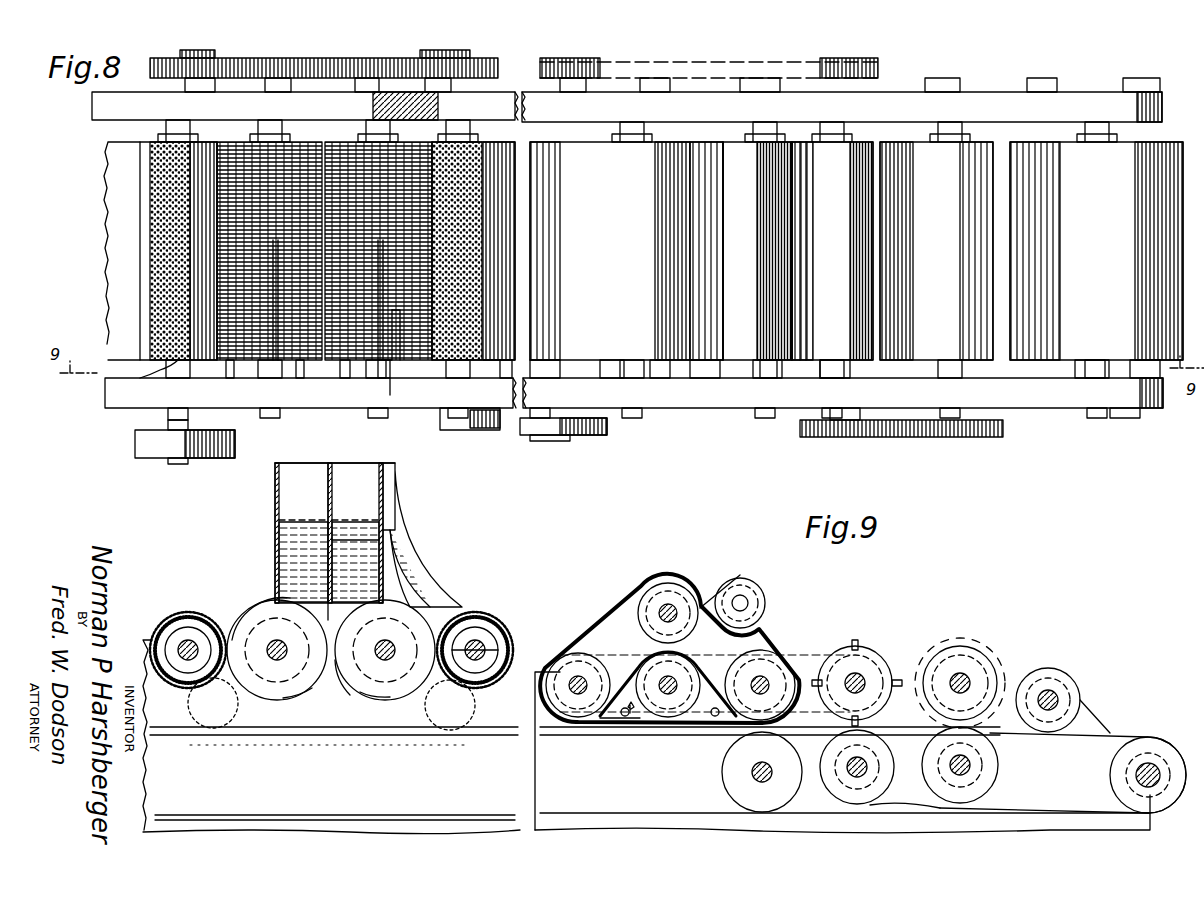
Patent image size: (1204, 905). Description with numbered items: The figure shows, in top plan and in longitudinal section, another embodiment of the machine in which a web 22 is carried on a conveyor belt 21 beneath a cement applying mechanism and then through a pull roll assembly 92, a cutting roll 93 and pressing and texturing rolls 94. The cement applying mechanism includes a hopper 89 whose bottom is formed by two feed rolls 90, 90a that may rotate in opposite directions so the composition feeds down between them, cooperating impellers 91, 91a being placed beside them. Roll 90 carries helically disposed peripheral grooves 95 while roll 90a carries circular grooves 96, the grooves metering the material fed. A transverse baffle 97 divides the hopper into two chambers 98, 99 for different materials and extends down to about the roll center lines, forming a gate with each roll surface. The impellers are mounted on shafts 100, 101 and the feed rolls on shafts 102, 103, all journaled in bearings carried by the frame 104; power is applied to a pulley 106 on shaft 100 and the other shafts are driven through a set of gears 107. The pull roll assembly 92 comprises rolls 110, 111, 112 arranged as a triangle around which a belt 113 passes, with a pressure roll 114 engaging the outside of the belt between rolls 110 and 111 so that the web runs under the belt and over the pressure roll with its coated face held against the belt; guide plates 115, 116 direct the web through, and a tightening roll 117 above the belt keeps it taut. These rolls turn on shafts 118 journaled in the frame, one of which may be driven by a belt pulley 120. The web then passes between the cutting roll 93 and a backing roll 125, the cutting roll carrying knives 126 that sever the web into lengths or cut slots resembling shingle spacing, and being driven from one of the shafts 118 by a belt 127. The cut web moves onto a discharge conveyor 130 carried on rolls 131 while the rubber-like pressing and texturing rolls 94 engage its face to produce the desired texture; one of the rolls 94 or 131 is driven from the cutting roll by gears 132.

In FIG. 8, the conveyor belt 21 is at (118, 246).
In FIG. 9, the conveyor belt 21 is at (195, 735).
In FIG. 9, the web 22 is at (255, 735).
In FIG. 8, the hopper 89 is at (343, 365).
In FIG. 9, the hopper 89 is at (372, 497).
In FIG. 8, the feed roll 90 is at (230, 192).
In FIG. 9, the feed roll 90 is at (268, 600).
In FIG. 8, the feed roll 90a is at (440, 360).
In FIG. 9, the feed roll 90a is at (395, 645).
In FIG. 8, the impeller 91 is at (150, 278).
In FIG. 9, the impeller 91 is at (190, 626).
In FIG. 8, the impeller 91a is at (490, 218).
In FIG. 9, the impeller 91a is at (490, 630).
In FIG. 8, the pull roll assembly 92 is at (757, 251).
In FIG. 9, the pull roll assembly 92 is at (712, 560).
In FIG. 8, the cutting roll 93 is at (832, 251).
In FIG. 9, the cutting roll 93 is at (870, 658).
In FIG. 8, the pressing and texturing rolls 94 is at (1031, 251).
In FIG. 9, the pressing and texturing rolls 94 is at (968, 648).
In FIG. 8, the peripheral grooves 95 is at (238, 375).
In FIG. 9, the peripheral grooves 95 is at (305, 692).
In FIG. 8, the peripheral grooves 96 is at (368, 365).
In FIG. 9, the peripheral grooves 96 is at (370, 697).
In FIG. 8, the transverse baffle 97 is at (380, 420).
In FIG. 9, the transverse baffle 97 is at (332, 478).
In FIG. 8, the chamber 98 is at (332, 300).
In FIG. 9, the chamber 98 is at (329, 533).
In FIG. 8, the chamber 99 is at (470, 475).
In FIG. 9, the chamber 99 is at (365, 480).
In FIG. 8, the shaft 100 is at (150, 378).
In FIG. 9, the shaft 100 is at (175, 650).
In FIG. 8, the shaft 101 is at (505, 378).
In FIG. 9, the shaft 101 is at (480, 648).
In FIG. 8, the shaft 102 is at (310, 378).
In FIG. 9, the shaft 102 is at (262, 645).
In FIG. 8, the shaft 103 is at (400, 370).
In FIG. 9, the shaft 103 is at (390, 655).
In FIG. 8, the frame 104 is at (800, 395).
In FIG. 9, the frame 104 is at (418, 536).
In FIG. 8, the pulley 106 is at (140, 447).
In FIG. 8, the set of gears 107 is at (362, 55).
In FIG. 8, the roll 110 is at (548, 378).
In FIG. 9, the roll 110 is at (590, 665).
In FIG. 9, the roll 111 is at (750, 655).
In FIG. 8, the roll 112 is at (680, 365).
In FIG. 9, the roll 112 is at (655, 600).
In FIG. 8, the belt 113 is at (626, 251).
In FIG. 9, the belt 113 is at (690, 600).
In FIG. 9, the pressure roll 114 is at (668, 712).
In FIG. 8, the guide plate 115 is at (615, 378).
In FIG. 9, the guide plate 115 is at (620, 716).
In FIG. 8, the guide plate 116 is at (730, 378).
In FIG. 9, the guide plate 116 is at (716, 718).
In FIG. 8, the tightening roll 117 is at (739, 251).
In FIG. 9, the tightening roll 117 is at (752, 590).
In FIG. 8, the shafts 118 is at (755, 78).
In FIG. 9, the shafts 118 is at (578, 695).
In FIG. 8, the belt pulley 120 is at (560, 435).
In FIG. 9, the backing roll 125 is at (880, 790).
In FIG. 8, the knives 126 is at (832, 230).
In FIG. 9, the knives 126 is at (857, 640).
In FIG. 8, the belt 127 is at (805, 70).
In FIG. 8, the discharge conveyor 130 is at (1115, 365).
In FIG. 9, the discharge conveyor 130 is at (1100, 800).
In FIG. 8, the rolls 131 is at (985, 365).
In FIG. 9, the rolls 131 is at (990, 760).
In FIG. 8, the gears 132 is at (900, 437).